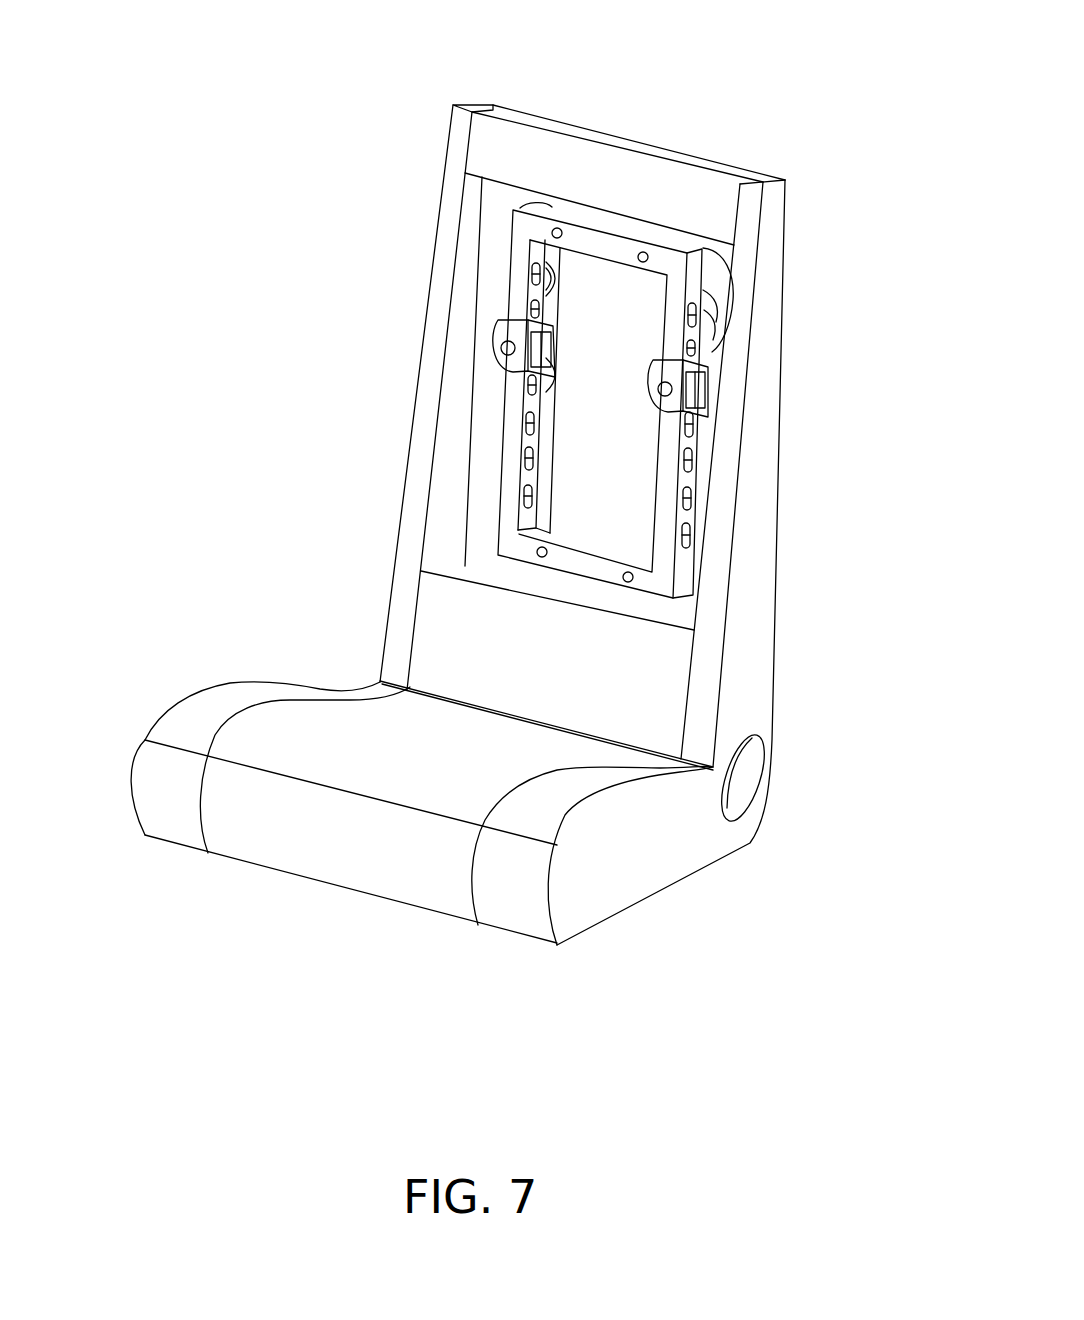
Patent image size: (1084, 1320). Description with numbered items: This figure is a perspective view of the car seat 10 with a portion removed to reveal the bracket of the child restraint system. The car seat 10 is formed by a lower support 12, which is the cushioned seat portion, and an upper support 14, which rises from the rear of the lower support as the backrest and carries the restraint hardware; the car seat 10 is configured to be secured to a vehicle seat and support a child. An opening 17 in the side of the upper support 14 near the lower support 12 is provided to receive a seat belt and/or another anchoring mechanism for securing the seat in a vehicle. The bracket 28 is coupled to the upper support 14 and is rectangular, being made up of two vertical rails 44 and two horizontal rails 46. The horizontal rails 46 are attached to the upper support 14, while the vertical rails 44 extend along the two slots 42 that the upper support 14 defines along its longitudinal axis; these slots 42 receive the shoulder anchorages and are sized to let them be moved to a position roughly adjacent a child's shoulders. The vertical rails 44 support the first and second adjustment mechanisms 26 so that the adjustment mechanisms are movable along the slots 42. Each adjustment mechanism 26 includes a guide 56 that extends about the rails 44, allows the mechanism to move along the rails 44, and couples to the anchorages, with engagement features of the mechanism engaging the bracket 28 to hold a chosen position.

The car seat 10 is at (430, 85).
The lower support 12 is at (592, 888).
The upper support 14 is at (753, 547).
The openings 17 is at (743, 792).
The adjustment mechanisms 26 is at (525, 289).
The bracket 28 is at (645, 208).
The slots 42 is at (710, 282).
The vertical rails 44 is at (497, 447).
The horizontal rails 46 is at (582, 228).
The guide 56 is at (657, 390).